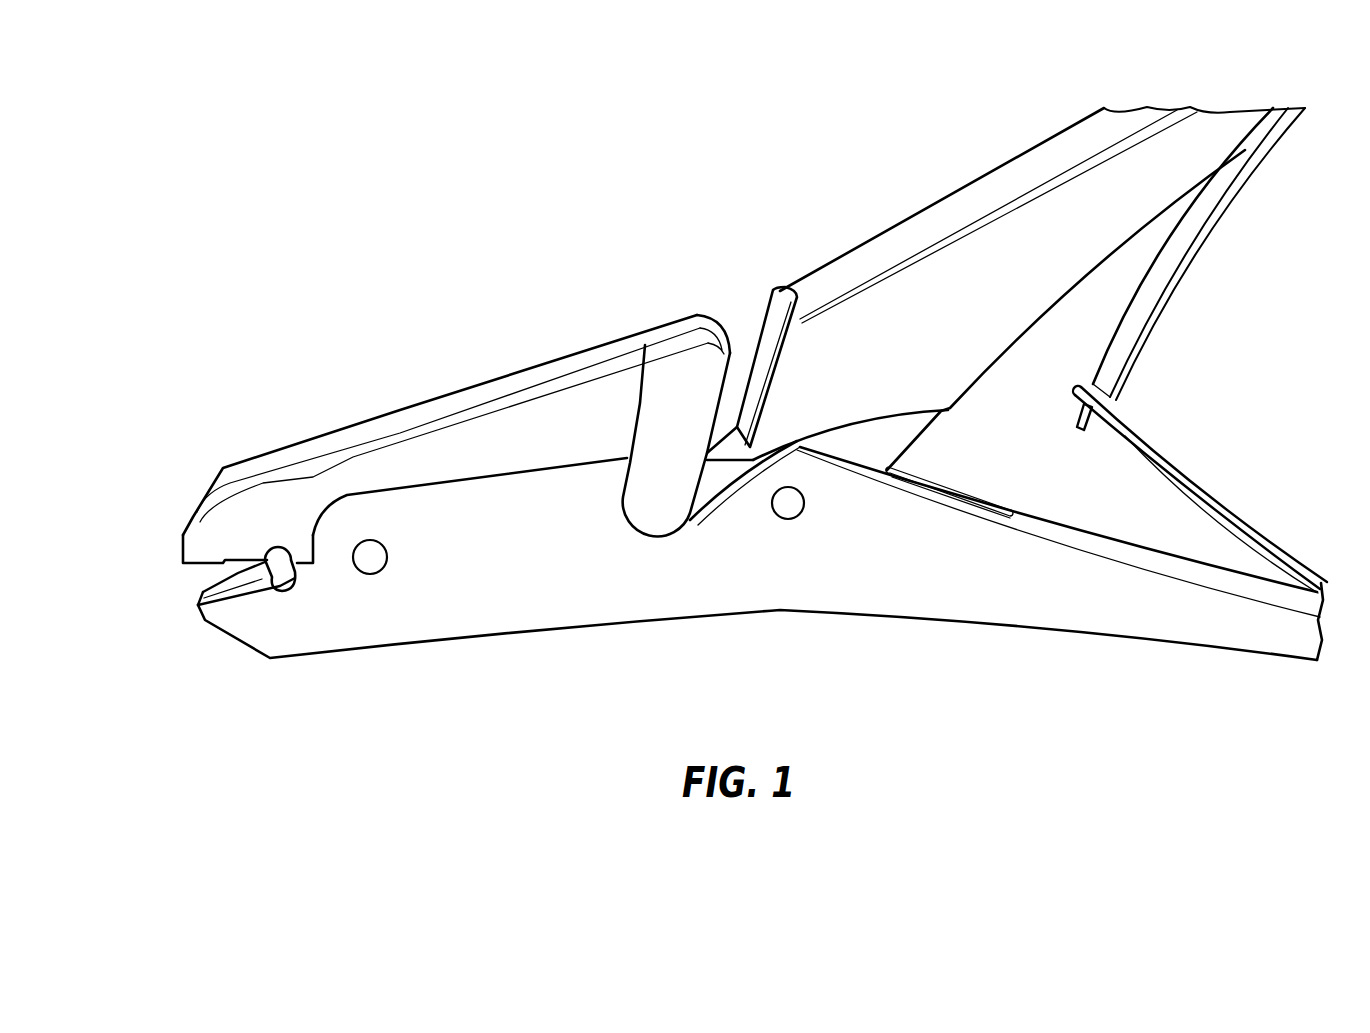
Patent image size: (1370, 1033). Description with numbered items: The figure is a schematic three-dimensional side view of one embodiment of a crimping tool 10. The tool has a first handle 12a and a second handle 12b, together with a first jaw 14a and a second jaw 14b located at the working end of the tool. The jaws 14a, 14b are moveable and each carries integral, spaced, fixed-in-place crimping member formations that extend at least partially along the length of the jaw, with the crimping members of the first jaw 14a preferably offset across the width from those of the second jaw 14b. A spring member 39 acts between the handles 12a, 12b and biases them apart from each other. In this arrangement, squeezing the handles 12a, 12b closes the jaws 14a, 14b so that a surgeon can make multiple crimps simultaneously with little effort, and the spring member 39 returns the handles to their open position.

The crimping tool 10 is at (488, 344).
The first handle 12a is at (943, 210).
The second handle 12b is at (1100, 632).
The first jaw 14a is at (181, 542).
The second jaw 14b is at (198, 606).
The spring member 39 is at (1120, 402).